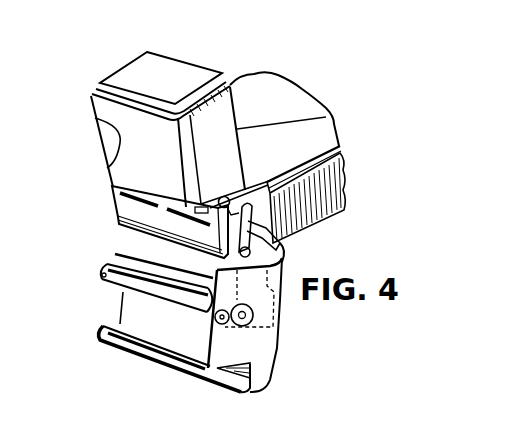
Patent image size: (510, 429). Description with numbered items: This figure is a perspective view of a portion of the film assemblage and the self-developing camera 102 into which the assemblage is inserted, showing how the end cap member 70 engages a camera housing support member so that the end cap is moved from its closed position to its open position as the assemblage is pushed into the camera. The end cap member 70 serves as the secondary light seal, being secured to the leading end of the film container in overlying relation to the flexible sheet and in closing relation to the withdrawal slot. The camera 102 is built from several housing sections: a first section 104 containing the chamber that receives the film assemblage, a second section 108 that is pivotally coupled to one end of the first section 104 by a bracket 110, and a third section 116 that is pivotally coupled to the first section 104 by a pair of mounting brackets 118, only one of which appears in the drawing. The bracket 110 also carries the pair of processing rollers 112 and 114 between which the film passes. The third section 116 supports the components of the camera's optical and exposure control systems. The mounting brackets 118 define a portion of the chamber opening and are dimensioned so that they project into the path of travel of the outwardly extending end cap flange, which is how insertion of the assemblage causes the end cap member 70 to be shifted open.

The self-developing camera 102 is at (360, 170).
The third section 116 is at (168, 74).
The mounting brackets 118 is at (221, 198).
The first section 104 is at (327, 210).
The end cap member 70 is at (110, 208).
The bracket 110 is at (279, 245).
The second section 108 is at (268, 342).
The processing roller 114 is at (161, 277).
The processing roller 112 is at (166, 296).